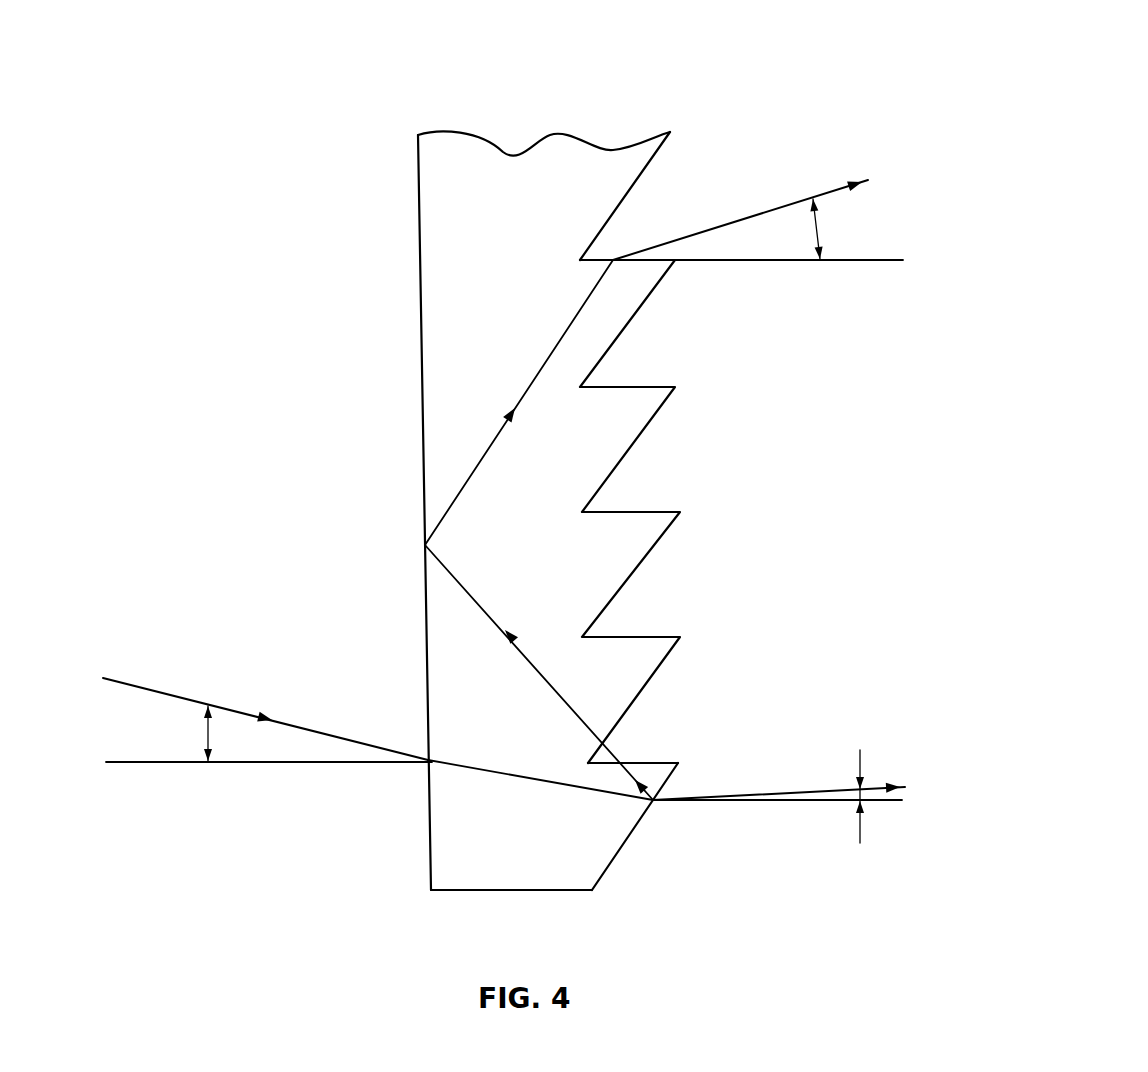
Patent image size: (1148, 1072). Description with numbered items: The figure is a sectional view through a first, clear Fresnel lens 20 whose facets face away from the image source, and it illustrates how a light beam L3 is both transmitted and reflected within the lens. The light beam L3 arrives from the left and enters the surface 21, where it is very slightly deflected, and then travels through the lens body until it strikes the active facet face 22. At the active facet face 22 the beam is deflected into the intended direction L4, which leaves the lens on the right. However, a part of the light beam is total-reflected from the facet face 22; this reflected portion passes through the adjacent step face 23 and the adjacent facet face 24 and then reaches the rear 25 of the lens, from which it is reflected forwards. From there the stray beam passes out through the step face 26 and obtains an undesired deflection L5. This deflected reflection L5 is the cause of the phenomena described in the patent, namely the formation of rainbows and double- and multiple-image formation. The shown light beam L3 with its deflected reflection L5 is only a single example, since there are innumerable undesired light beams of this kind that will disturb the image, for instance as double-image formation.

The clear Fresnel lens 20 is at (532, 113).
The surface 21 is at (428, 828).
The active facet face 22 is at (620, 850).
The step face 23 is at (648, 762).
The adjacent facet face 24 is at (673, 643).
The rear of the lens 25 is at (420, 423).
The step face 26 is at (603, 258).
The light beam L3 is at (378, 711).
The deflected direction L4 is at (793, 793).
The undesired deflection L5 is at (670, 469).